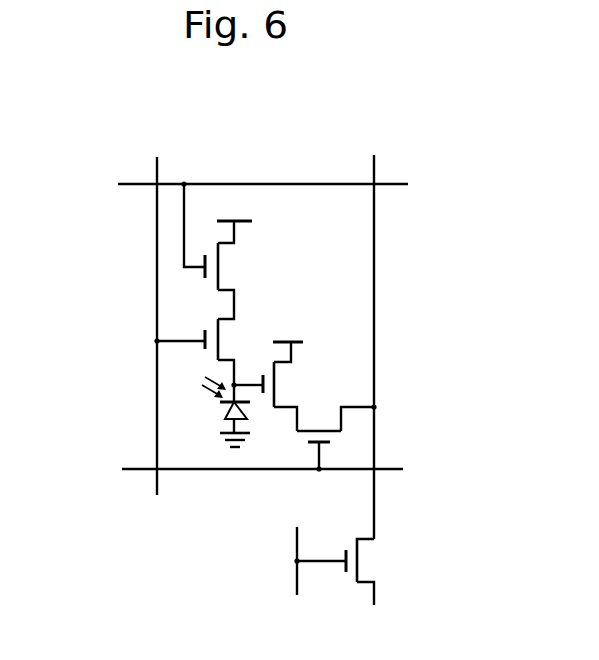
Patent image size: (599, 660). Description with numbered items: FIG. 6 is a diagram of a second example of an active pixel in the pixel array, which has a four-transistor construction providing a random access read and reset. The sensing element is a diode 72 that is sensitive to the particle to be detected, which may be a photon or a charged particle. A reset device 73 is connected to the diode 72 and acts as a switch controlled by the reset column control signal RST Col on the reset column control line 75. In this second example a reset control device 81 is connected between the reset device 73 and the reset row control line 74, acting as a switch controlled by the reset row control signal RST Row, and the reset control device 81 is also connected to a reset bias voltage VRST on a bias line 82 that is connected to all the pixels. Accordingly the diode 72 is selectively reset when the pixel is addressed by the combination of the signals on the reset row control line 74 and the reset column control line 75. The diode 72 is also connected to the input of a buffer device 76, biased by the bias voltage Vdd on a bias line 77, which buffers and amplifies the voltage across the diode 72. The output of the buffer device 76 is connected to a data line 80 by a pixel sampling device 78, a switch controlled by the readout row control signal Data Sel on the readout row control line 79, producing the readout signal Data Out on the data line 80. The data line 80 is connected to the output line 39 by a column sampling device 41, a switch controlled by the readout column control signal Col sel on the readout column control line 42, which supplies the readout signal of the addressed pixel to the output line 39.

The reset column control line 75 is at (156, 165).
The reset row control line 74 is at (131, 185).
The reset control device 81 is at (254, 146).
The bias line 82 is at (253, 222).
The data line 80 is at (375, 252).
The reset device 73 is at (218, 358).
The diode 72 is at (228, 408).
The bias line 77 is at (304, 343).
The buffer device 76 is at (277, 383).
The pixel sampling device 78 is at (301, 433).
The readout row control line 79 is at (136, 471).
The readout column control line 42 is at (296, 580).
The column sampling device 41 is at (356, 540).
The output line 39 is at (378, 588).